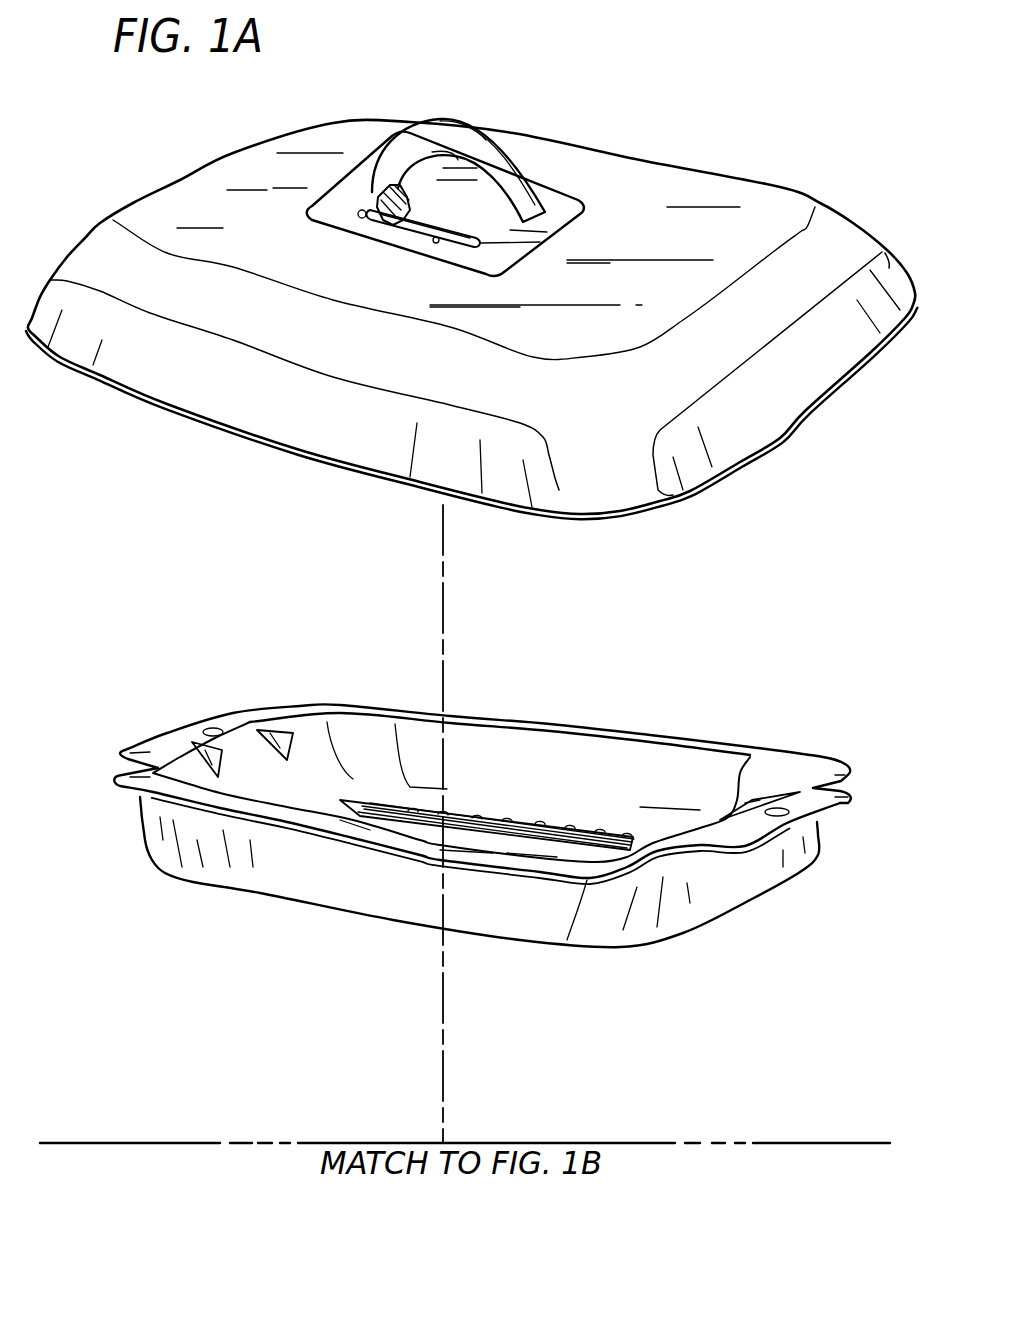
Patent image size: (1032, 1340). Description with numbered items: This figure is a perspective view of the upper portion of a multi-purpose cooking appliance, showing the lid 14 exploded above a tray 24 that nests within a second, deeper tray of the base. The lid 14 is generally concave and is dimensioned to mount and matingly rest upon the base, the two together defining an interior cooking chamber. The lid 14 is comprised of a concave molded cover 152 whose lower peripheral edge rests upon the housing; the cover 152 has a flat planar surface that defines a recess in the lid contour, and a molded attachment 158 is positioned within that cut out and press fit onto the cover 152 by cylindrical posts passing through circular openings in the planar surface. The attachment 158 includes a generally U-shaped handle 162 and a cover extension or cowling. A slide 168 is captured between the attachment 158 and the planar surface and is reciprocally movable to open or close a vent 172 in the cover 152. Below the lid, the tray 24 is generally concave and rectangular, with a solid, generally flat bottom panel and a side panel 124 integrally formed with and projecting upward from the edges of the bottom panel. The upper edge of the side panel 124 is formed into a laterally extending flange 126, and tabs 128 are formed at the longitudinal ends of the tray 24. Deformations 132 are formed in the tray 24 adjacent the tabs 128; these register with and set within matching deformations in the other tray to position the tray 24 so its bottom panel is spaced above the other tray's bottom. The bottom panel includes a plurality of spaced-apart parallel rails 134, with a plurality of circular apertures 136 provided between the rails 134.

The lid 14 is at (780, 188).
The tray 24 is at (218, 904).
The side panel 124 is at (410, 888).
The lateral extending flange 126 is at (223, 802).
The tabs 128 is at (163, 747).
The deformations 132 is at (213, 730).
The rails 134 is at (612, 833).
The circular apertures 136 is at (573, 828).
The cover 152 is at (637, 203).
The attachment 158 is at (483, 203).
The handle 162 is at (480, 130).
The slide 168 is at (377, 207).
The vent 172 is at (437, 241).